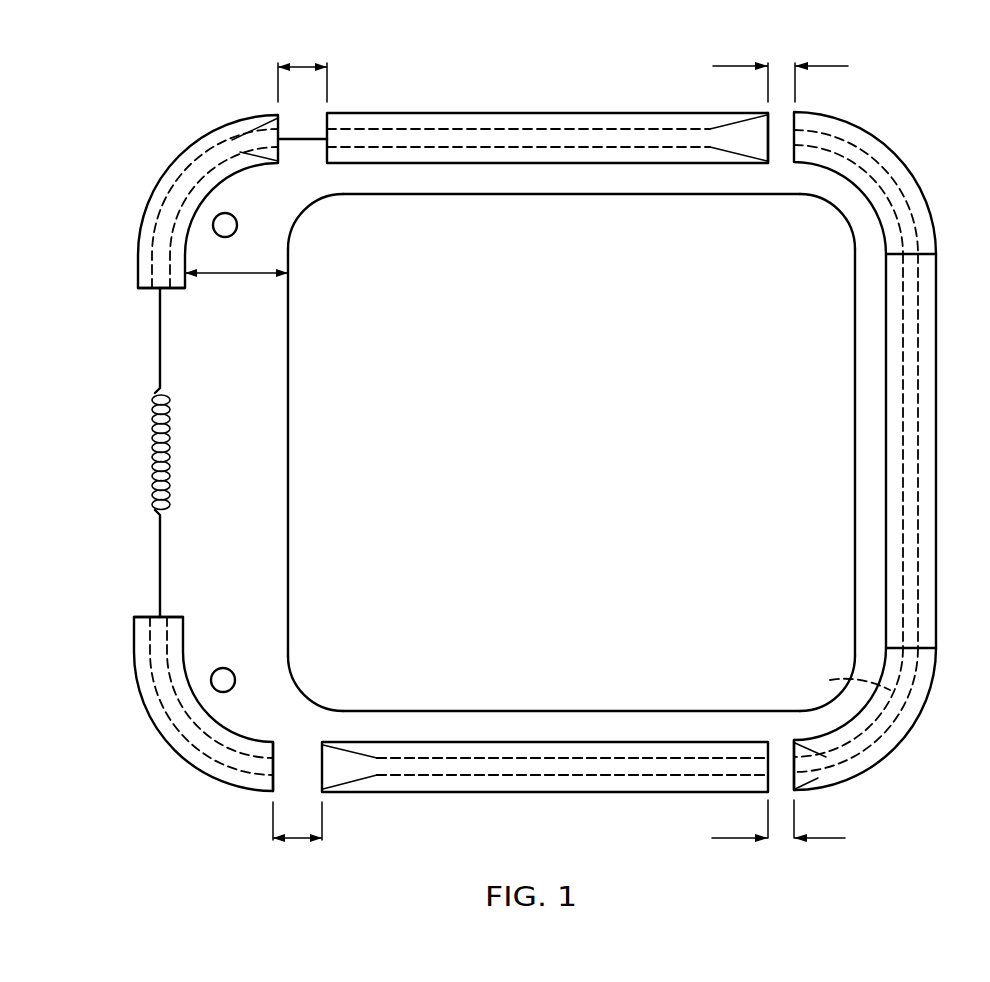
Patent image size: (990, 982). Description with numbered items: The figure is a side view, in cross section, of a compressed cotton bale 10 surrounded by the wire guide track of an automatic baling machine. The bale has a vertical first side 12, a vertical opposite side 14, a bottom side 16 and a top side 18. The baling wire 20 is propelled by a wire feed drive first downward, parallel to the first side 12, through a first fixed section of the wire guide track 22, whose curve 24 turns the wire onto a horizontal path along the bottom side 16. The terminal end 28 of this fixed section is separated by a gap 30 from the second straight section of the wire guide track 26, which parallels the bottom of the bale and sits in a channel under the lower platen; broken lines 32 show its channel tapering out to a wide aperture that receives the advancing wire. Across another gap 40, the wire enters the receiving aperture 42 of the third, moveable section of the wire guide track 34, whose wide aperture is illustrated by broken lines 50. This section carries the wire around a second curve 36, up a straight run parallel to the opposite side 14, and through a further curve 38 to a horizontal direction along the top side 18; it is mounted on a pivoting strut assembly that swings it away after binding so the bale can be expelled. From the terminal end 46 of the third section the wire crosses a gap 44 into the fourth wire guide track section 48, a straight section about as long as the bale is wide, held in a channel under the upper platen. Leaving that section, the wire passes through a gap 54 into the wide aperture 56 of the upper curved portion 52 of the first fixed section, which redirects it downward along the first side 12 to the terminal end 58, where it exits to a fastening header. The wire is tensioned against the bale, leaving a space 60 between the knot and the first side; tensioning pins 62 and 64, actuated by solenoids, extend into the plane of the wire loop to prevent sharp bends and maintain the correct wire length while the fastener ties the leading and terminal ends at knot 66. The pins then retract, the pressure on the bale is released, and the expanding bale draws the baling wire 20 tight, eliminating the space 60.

The cotton bale 10 is at (572, 453).
The vertical first side 12 is at (290, 468).
The vertical opposite side 14 is at (855, 428).
The bottom side 16 is at (536, 709).
The top side 18 is at (540, 196).
The baling wire 20 is at (159, 577).
The first fixed section of the wire guide track 22 is at (135, 643).
The curve 24 is at (103, 697).
The second straight section of the wire guide track 26 is at (450, 793).
The terminal end of the first fixed wire guide track section 28 is at (276, 744).
The gap 30 is at (295, 843).
The broken lines 32 is at (620, 777).
The third, moveable section of the wire guide track 34 is at (930, 489).
The second curve 36 is at (957, 688).
The curve 38 is at (832, 92).
The gap 40 is at (728, 840).
The receiving aperture 42 is at (783, 745).
The gap 44 is at (748, 65).
The terminal end of the third wire guide track section 46 is at (790, 152).
The fourth wire guide track section 48 is at (527, 112).
The broken lines 50 is at (842, 673).
The upper curved portion of the first fixed wire guide track section 52 is at (164, 178).
The gap 54 is at (302, 65).
The wide aperture 56 is at (284, 152).
The terminal end of the upper curved portion 58 is at (145, 297).
The space 60 is at (235, 274).
The tensioning pin 62 is at (236, 220).
The tensioning pin 64 is at (225, 668).
The knot 66 is at (153, 445).